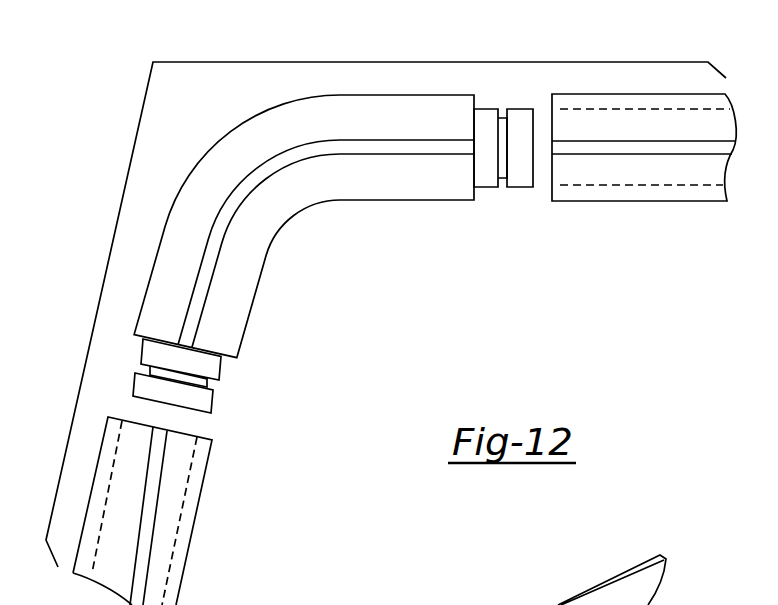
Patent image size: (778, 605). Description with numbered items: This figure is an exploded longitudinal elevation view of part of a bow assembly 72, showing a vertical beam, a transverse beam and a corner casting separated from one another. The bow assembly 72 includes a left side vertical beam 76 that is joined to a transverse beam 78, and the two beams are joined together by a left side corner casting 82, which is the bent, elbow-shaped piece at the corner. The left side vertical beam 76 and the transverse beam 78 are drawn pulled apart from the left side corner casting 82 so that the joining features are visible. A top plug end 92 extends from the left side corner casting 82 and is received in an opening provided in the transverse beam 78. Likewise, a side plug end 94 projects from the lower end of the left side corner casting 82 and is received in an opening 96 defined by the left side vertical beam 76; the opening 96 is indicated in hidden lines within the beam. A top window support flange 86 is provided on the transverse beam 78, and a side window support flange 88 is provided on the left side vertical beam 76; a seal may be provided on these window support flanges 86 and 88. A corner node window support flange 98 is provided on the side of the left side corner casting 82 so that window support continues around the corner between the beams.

The bow assembly 72 is at (192, 60).
The left side corner casting 82 is at (208, 168).
The corner node window support flange 98 is at (252, 187).
The top plug end 92 is at (520, 168).
The side plug end 94 is at (207, 396).
The transverse beam 78 is at (608, 202).
The top window support flange 86 is at (688, 147).
The left side vertical beam 76 is at (200, 497).
The side window support flange 88 is at (137, 537).
The opening 96 is at (612, 108).